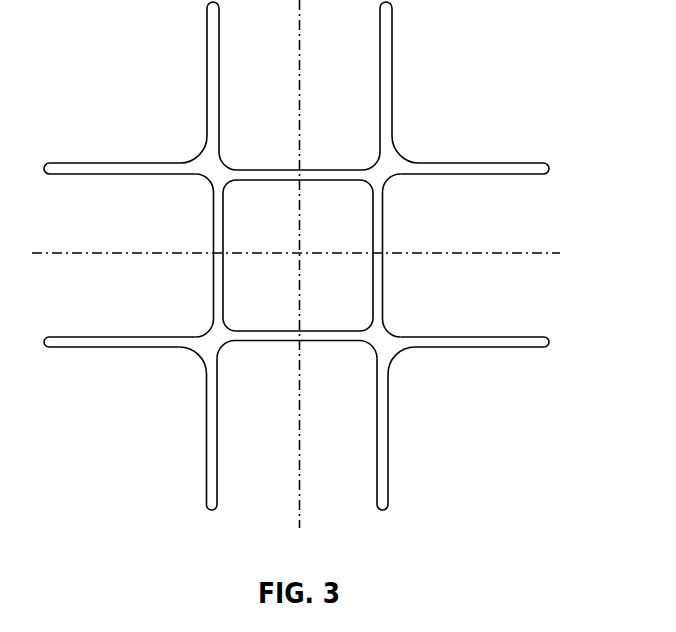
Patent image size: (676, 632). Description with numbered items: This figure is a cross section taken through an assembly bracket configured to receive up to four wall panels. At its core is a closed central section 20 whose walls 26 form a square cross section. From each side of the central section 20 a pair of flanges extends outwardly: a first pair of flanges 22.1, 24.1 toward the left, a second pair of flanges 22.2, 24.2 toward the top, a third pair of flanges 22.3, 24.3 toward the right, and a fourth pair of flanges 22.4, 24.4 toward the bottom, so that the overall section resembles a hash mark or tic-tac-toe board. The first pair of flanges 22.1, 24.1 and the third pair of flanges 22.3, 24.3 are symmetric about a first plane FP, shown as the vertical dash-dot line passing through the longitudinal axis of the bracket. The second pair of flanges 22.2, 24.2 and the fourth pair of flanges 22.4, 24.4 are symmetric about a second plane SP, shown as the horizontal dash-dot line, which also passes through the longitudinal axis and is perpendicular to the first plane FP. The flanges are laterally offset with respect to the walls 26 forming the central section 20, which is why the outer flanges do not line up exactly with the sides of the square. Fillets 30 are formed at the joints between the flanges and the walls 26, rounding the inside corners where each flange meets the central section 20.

The closed central section 20 is at (356, 314).
The flange of first pair 22.1 is at (84, 346).
The flange of second pair 22.2 is at (208, 57).
The flange of third pair 22.3 is at (503, 163).
The flange of fourth pair 22.4 is at (388, 459).
The flange of first pair 24.1 is at (103, 163).
The flange of second pair 24.2 is at (391, 56).
The flange of third pair 24.3 is at (496, 347).
The flange of fourth pair 24.4 is at (208, 462).
The walls 26 is at (277, 172).
The fillets 30 is at (224, 166).
The second plane SP is at (552, 250).
The first plane FP is at (296, 494).